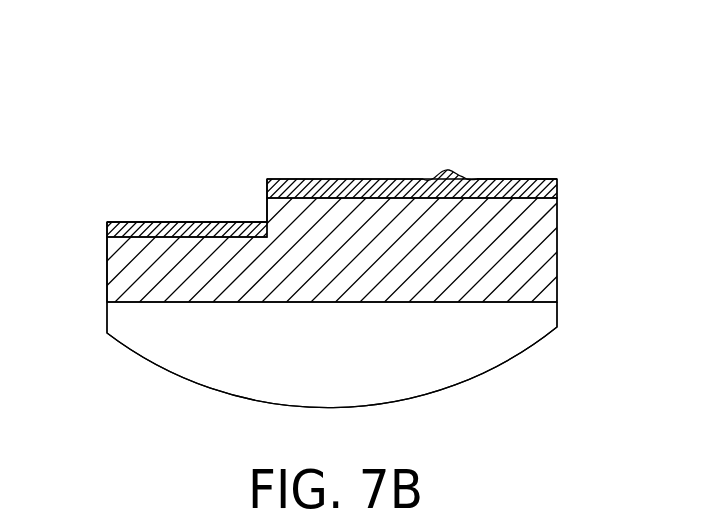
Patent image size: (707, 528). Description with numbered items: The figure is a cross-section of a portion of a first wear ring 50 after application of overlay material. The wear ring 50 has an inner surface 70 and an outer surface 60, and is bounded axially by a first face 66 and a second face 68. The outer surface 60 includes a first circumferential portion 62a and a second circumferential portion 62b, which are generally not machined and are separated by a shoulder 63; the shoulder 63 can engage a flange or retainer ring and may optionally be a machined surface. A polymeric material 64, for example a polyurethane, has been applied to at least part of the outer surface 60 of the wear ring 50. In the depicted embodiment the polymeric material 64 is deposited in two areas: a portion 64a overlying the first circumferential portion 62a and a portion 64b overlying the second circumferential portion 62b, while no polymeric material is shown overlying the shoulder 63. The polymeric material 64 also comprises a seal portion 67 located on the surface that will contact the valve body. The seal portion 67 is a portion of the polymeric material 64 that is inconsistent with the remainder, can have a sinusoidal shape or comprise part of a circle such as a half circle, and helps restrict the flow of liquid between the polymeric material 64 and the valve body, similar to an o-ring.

The first wear ring 50 is at (537, 97).
The outer surface 60 is at (189, 237).
The first circumferential portion 62a is at (538, 198).
The second circumferential portion 62b is at (133, 238).
The shoulder 63 is at (267, 208).
The polymeric material 64 is at (148, 222).
The polymeric material portion overlying first circumferential portion 64a is at (503, 177).
The polymeric material portion overlying second circumferential portion 64b is at (176, 222).
The first face 66 is at (557, 270).
The seal portion 67 is at (460, 172).
The second face 68 is at (107, 290).
The inner surface 70 is at (283, 303).